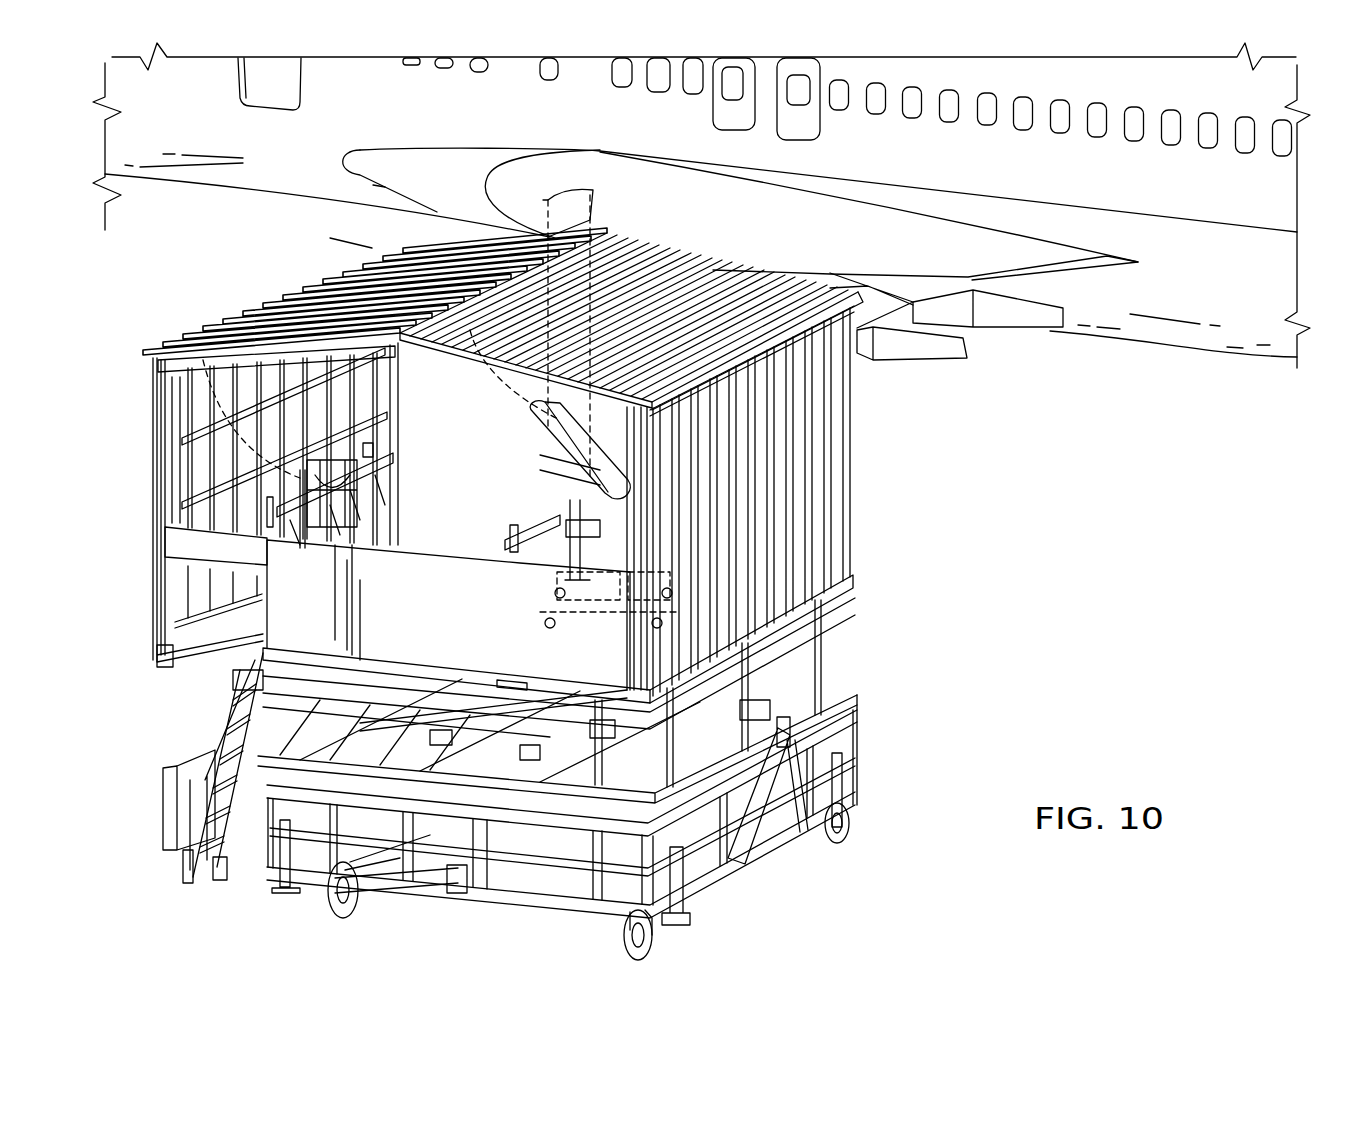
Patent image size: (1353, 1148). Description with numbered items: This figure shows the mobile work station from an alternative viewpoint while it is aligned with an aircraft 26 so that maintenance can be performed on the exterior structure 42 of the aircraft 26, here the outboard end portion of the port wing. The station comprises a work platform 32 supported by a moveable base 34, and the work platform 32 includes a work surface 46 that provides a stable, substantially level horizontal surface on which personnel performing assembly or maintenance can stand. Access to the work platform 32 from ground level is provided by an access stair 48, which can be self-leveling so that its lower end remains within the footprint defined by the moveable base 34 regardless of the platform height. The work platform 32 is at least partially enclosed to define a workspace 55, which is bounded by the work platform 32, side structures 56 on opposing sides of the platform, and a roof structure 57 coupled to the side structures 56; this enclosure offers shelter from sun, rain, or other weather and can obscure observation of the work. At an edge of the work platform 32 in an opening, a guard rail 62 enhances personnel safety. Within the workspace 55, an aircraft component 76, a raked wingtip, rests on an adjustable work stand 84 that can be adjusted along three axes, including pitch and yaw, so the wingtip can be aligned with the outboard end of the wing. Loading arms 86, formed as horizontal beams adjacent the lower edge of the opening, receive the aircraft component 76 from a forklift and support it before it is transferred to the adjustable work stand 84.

The aircraft 26 is at (1095, 362).
The work platform 32 is at (855, 585).
The moveable base 34 is at (853, 746).
The exterior structure 42 is at (545, 465).
The work surface 46 is at (465, 550).
The access stair 48 is at (257, 876).
The workspace 55 is at (207, 473).
The side structure 56 is at (156, 412).
The roof structure 57 is at (213, 328).
The guard rail 62 is at (195, 545).
The aircraft component 76 is at (495, 415).
The adjustable work stand 84 is at (548, 624).
The loading arms 86 is at (372, 498).